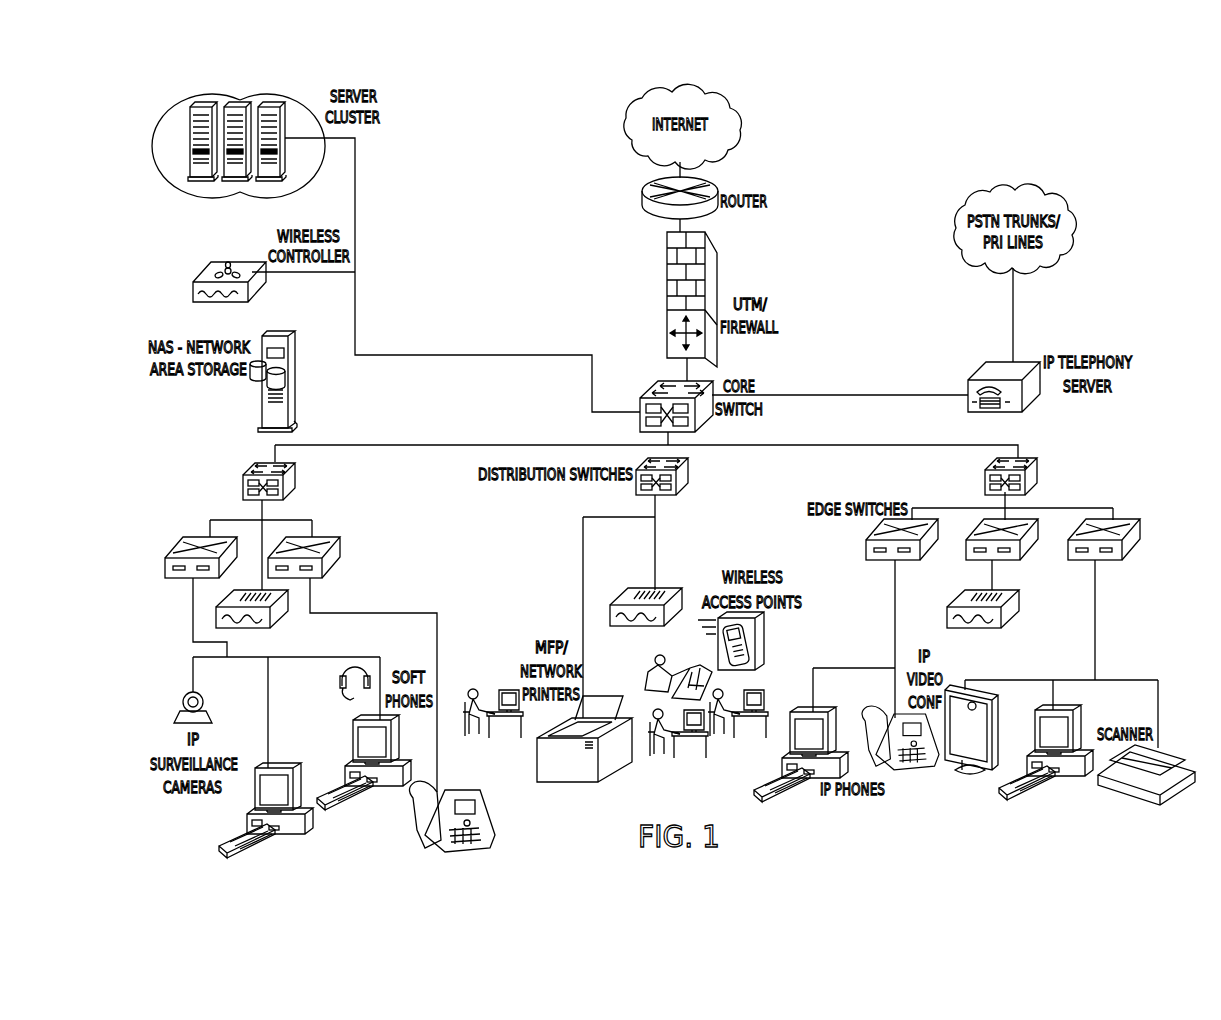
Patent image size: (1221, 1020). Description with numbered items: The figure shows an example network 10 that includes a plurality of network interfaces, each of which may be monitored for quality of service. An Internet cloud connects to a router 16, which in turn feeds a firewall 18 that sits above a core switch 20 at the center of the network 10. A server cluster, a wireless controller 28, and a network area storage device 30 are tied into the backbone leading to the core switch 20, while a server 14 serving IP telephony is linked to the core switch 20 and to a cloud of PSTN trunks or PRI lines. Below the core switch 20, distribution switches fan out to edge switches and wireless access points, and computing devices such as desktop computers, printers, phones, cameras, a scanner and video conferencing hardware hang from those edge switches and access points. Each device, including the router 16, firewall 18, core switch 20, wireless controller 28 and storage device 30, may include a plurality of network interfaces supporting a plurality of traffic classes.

The network 10 is at (1133, 208).
The server 14 is at (989, 362).
The router 16 is at (644, 200).
The firewall 18 is at (667, 265).
The core switch 20 is at (645, 396).
The wireless controller 28 is at (250, 290).
The network area storage device 30 is at (296, 390).